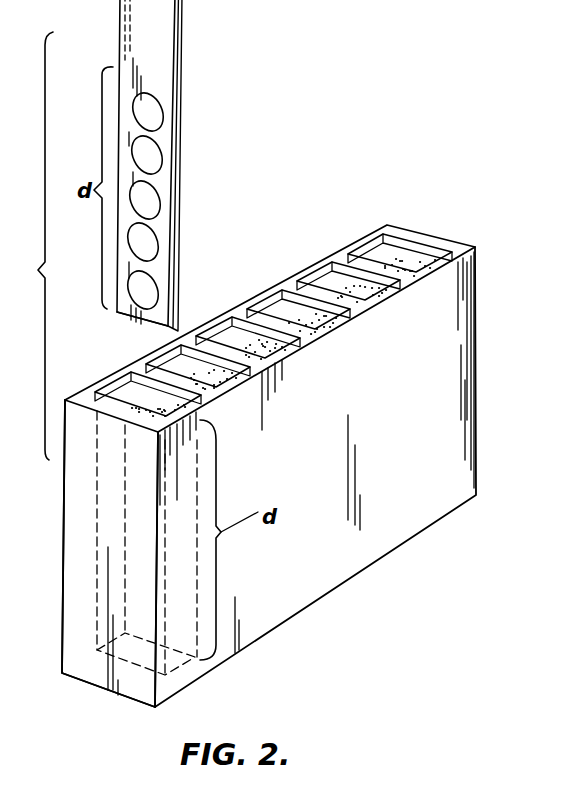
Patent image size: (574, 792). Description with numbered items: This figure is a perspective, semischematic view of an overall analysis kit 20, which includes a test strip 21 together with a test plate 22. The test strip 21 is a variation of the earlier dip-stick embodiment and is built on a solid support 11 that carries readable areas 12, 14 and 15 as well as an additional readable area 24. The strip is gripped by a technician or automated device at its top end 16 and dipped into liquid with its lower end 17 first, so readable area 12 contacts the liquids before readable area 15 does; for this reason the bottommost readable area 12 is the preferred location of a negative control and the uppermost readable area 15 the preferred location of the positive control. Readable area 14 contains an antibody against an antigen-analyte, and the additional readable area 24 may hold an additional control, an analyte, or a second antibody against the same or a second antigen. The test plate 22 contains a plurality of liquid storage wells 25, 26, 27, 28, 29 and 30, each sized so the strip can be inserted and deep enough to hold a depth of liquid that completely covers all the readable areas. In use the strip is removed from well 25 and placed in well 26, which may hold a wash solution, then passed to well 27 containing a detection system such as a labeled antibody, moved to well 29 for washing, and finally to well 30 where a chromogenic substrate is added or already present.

The solid support 11 is at (135, 57).
The top end 16 is at (162, 42).
The test strip 21 is at (182, 108).
The readable area 15 is at (164, 124).
The additional readable area 24 is at (152, 203).
The readable area 14 is at (148, 250).
The readable area 12 is at (147, 292).
The lower end 17 is at (141, 320).
The analysis kit 20 is at (350, 231).
The test plate 22 is at (62, 514).
The liquid storage well 25 is at (120, 385).
The liquid storage well 26 is at (186, 358).
The liquid storage well 27 is at (300, 336).
The liquid storage well 28 is at (270, 308).
The liquid storage well 29 is at (328, 277).
The well 30 is at (402, 248).